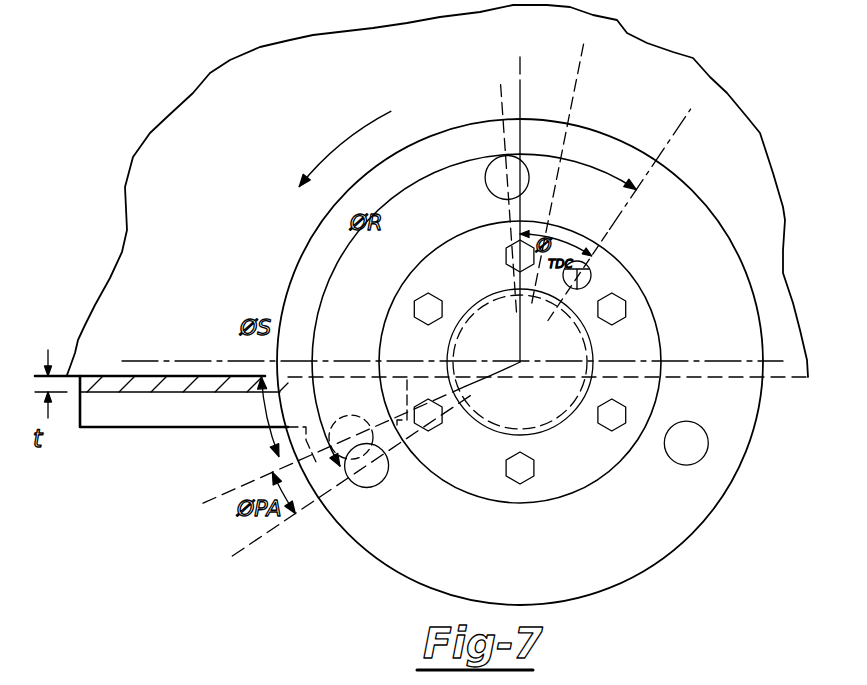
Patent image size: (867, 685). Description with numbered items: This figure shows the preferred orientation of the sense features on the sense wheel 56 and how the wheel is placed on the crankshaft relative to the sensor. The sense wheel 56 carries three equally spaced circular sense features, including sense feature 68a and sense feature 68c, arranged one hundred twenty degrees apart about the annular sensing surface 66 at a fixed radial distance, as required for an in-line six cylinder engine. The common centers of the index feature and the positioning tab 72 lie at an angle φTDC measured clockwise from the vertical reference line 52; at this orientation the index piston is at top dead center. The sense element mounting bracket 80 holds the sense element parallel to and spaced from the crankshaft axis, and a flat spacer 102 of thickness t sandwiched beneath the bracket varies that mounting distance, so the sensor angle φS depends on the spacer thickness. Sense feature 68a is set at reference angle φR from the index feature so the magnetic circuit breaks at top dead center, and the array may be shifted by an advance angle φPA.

The vertical reference line 52 is at (522, 85).
The sense wheel 56 is at (670, 624).
The annular sensing surface 66 is at (723, 323).
The sense feature 68a is at (367, 487).
The sense feature 68c is at (530, 175).
The positioning tab 72 is at (591, 281).
The sense element mounting bracket 80 is at (207, 415).
The flat spacer 102 is at (82, 393).